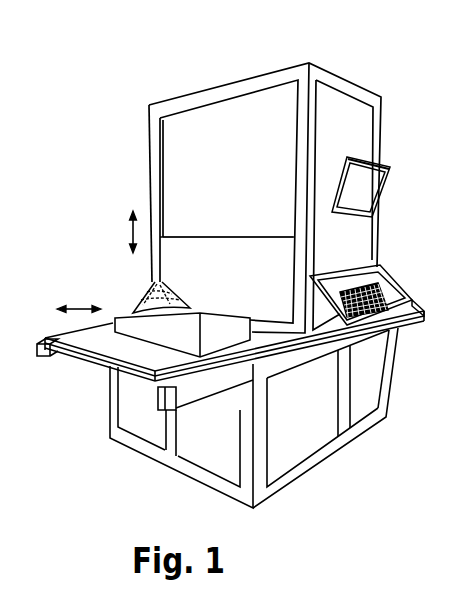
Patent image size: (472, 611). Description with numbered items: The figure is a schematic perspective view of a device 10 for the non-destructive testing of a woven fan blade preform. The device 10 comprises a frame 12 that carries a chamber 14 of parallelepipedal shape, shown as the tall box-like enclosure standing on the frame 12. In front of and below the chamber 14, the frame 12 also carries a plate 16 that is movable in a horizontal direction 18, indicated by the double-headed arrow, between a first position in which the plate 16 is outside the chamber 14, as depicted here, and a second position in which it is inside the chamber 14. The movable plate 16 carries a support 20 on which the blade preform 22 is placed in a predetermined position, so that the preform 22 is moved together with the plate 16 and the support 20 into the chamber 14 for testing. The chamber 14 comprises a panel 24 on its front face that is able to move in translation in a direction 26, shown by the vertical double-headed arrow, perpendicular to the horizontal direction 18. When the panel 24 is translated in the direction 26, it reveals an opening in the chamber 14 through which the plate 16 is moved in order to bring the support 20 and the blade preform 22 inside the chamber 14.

The device 10 is at (160, 62).
The frame 12 is at (303, 350).
The chamber 14 is at (217, 97).
The plate 16 is at (70, 335).
The horizontal direction 18 is at (82, 307).
The support 20 is at (187, 322).
The blade preform 22 is at (140, 303).
The panel 24 is at (190, 260).
The direction 26 is at (114, 223).